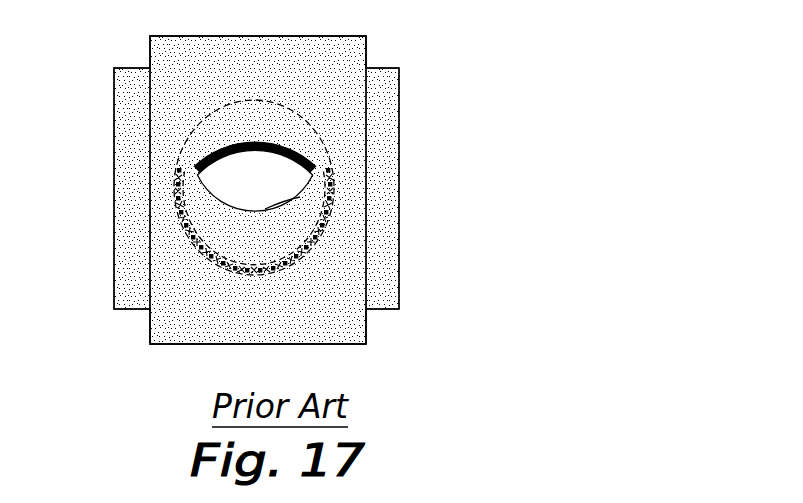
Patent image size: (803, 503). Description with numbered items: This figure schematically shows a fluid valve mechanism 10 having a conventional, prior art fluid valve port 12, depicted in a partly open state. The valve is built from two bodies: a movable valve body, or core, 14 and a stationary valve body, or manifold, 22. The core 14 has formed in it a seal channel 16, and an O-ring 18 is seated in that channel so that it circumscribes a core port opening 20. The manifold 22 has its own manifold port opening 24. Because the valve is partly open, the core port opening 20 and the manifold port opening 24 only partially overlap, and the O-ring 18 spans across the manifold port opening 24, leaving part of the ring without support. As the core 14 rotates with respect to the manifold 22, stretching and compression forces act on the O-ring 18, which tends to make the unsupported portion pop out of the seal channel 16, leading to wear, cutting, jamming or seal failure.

The fluid valve mechanism 10 is at (441, 88).
The fluid valve port 12 is at (174, 163).
The movable valve body 14 is at (400, 227).
The seal channel 16 is at (320, 253).
The O-ring 18 is at (300, 147).
The core port opening 20 is at (242, 153).
The stationary valve body 22 is at (365, 325).
The manifold port opening 24 is at (300, 197).